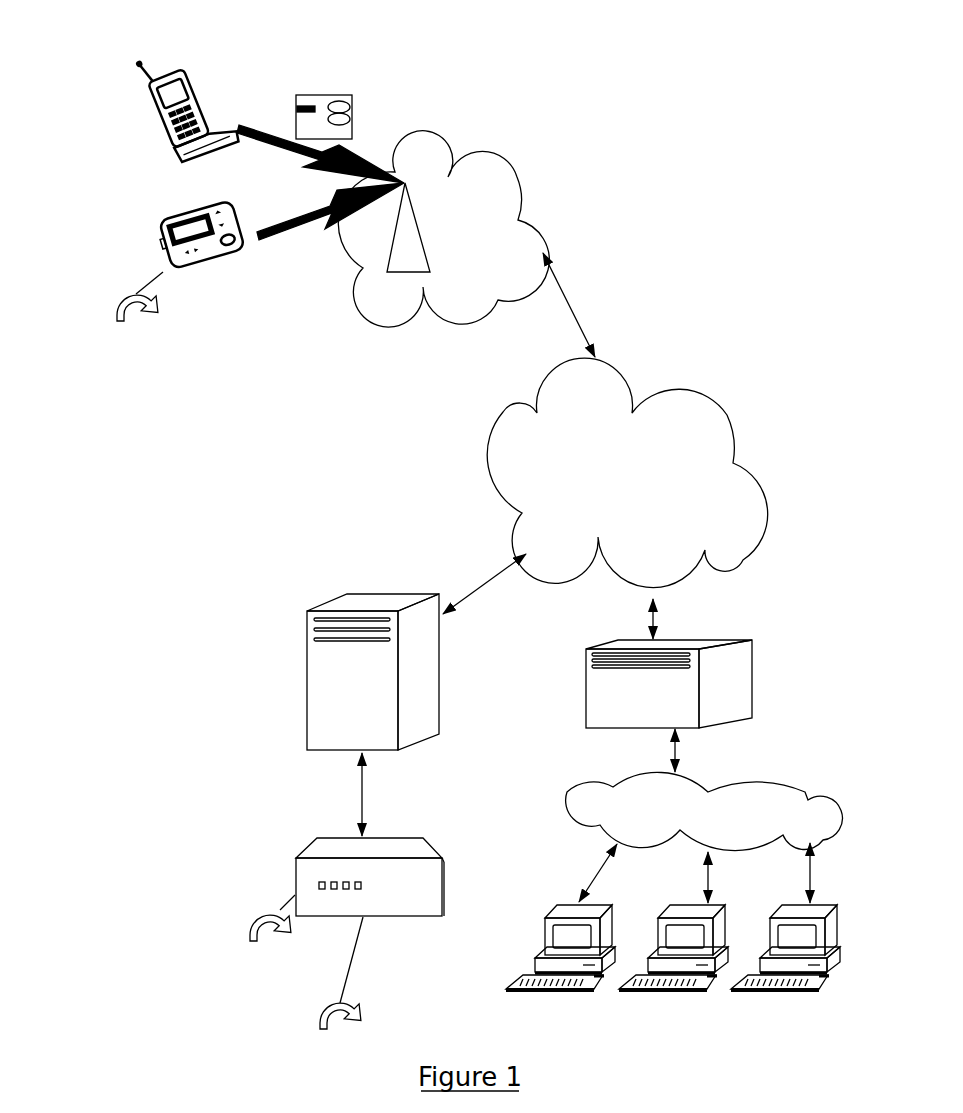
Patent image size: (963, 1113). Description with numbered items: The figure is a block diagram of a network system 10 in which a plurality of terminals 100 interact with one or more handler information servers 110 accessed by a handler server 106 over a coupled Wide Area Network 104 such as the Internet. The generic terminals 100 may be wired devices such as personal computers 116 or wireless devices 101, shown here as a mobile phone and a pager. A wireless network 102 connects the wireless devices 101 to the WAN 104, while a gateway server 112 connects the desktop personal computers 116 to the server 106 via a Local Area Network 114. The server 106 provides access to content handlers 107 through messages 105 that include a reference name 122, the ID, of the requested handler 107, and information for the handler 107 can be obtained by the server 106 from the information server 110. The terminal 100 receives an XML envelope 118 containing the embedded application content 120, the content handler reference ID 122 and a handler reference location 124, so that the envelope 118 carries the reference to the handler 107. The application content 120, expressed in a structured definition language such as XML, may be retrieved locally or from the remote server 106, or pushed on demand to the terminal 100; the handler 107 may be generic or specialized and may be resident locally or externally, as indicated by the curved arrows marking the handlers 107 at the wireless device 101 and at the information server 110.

The network system 10 is at (651, 45).
The terminal 100 is at (287, 70).
The wireless device 101 is at (193, 80).
The wireless network 102 is at (512, 160).
The Wide Area Network (WAN) 104 is at (688, 393).
The message 105 is at (500, 571).
The handler server 106 is at (306, 672).
The content handler 107 is at (118, 306).
The handler information server 110 is at (330, 840).
The gateway server 112 is at (586, 685).
The Local Area Network (LAN) 114 is at (586, 790).
The personal computer 116 is at (565, 906).
The XML envelope 118 is at (296, 115).
The application content 120 is at (305, 110).
The content handler reference ID 122 is at (346, 102).
The handler reference location 124 is at (348, 126).